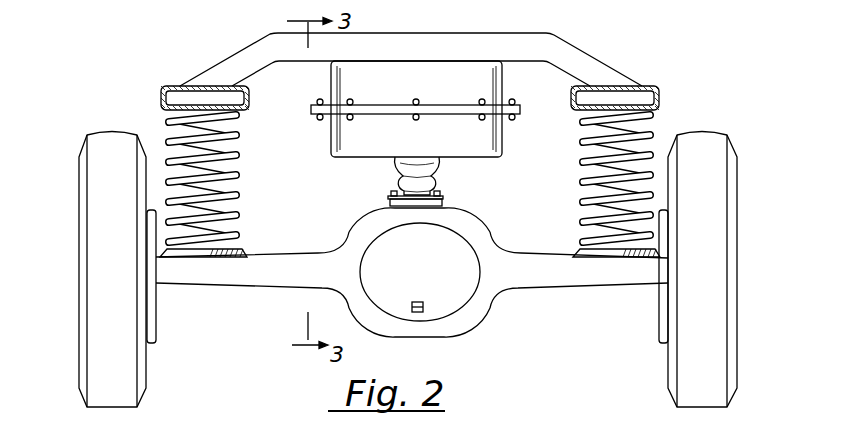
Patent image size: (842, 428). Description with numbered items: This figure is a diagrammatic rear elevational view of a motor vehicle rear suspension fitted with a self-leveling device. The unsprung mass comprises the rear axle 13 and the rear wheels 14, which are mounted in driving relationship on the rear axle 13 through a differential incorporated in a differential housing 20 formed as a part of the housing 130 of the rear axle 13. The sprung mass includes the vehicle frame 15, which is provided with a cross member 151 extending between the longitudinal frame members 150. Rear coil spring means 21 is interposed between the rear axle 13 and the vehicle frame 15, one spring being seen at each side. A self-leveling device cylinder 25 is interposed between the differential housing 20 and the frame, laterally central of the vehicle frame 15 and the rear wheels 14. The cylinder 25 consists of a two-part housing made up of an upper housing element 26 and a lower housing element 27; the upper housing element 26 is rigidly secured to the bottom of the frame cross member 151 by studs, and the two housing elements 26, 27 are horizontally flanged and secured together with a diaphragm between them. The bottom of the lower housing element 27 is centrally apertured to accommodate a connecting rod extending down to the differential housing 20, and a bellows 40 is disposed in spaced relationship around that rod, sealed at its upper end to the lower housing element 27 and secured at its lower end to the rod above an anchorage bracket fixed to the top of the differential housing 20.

The rear axle 13 is at (564, 289).
The rear wheels 14 is at (97, 192).
The vehicle frame 15 is at (420, 48).
The cross member 151 is at (481, 43).
The longitudinal frame members 150 is at (166, 88).
The differential housing 20 is at (470, 320).
The rear coil spring means 21 is at (168, 133).
The self-leveling device cylinder 25 is at (330, 143).
The upper housing element 26 is at (493, 93).
The lower housing element 27 is at (500, 131).
The bellows 40 is at (398, 174).
The rear axle housing 130 is at (230, 279).